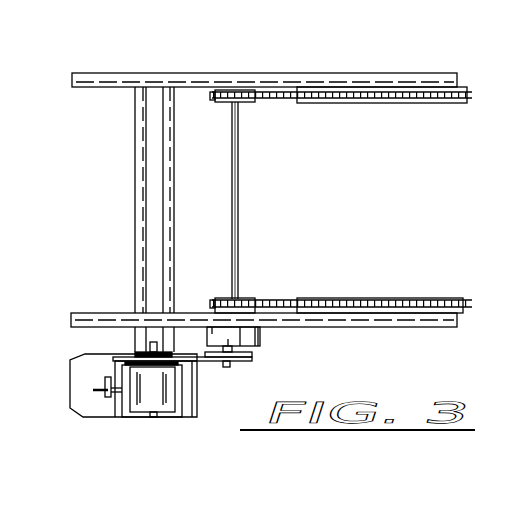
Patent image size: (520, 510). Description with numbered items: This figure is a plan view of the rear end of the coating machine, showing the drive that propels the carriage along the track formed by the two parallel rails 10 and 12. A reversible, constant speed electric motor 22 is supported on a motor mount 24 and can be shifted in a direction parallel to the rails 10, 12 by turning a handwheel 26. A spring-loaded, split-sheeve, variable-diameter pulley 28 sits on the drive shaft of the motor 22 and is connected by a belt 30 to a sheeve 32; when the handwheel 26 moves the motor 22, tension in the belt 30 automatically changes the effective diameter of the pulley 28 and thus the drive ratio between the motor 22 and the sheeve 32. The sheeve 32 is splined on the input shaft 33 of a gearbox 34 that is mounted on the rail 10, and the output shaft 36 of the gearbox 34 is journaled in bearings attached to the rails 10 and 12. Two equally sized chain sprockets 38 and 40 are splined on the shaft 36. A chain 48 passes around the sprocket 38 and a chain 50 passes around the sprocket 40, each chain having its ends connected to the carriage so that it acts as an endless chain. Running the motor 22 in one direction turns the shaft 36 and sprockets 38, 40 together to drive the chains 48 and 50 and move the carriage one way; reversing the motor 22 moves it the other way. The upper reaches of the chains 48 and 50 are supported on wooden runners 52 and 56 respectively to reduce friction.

The rail 10 is at (390, 322).
The rail 12 is at (338, 82).
The electric motor 22 is at (152, 404).
The motor mount 24 is at (193, 412).
The handwheel 26 is at (105, 382).
The variable-diameter pulley 28 is at (137, 352).
The belt 30 is at (250, 357).
The sheeve 32 is at (252, 360).
The input shaft 33 is at (230, 368).
The gearbox 34 is at (262, 340).
The output shaft 36 is at (238, 228).
The chain sprocket 38 is at (245, 298).
The chain sprocket 40 is at (249, 101).
The chain 48 is at (330, 300).
The chain 50 is at (333, 101).
The wooden runner 52 is at (318, 299).
The wooden runner 56 is at (320, 103).